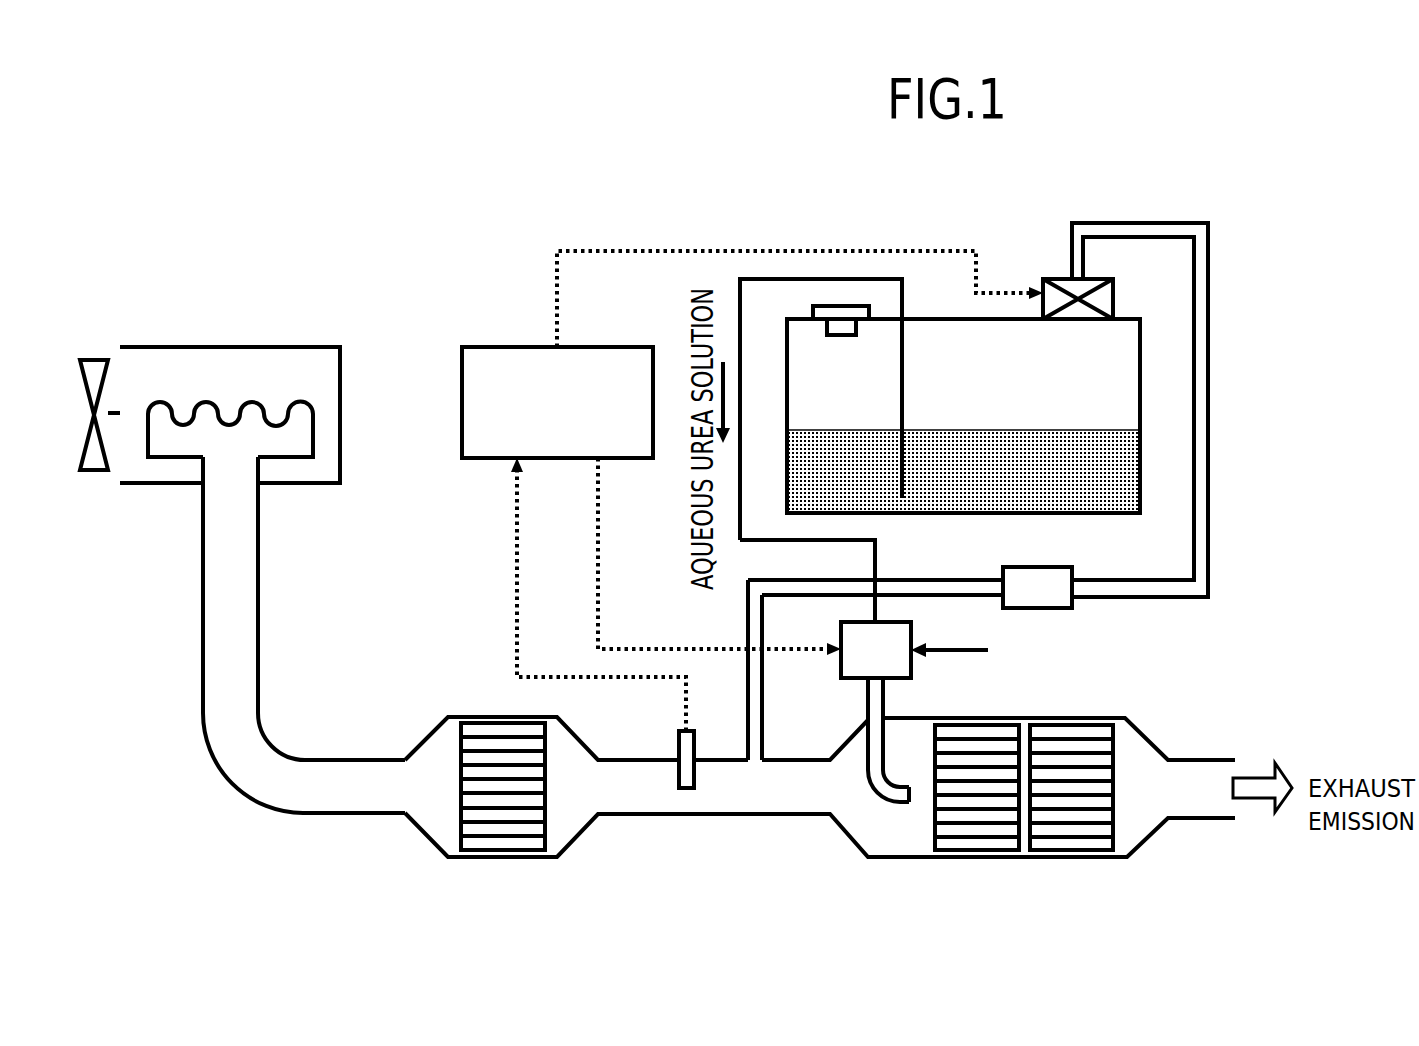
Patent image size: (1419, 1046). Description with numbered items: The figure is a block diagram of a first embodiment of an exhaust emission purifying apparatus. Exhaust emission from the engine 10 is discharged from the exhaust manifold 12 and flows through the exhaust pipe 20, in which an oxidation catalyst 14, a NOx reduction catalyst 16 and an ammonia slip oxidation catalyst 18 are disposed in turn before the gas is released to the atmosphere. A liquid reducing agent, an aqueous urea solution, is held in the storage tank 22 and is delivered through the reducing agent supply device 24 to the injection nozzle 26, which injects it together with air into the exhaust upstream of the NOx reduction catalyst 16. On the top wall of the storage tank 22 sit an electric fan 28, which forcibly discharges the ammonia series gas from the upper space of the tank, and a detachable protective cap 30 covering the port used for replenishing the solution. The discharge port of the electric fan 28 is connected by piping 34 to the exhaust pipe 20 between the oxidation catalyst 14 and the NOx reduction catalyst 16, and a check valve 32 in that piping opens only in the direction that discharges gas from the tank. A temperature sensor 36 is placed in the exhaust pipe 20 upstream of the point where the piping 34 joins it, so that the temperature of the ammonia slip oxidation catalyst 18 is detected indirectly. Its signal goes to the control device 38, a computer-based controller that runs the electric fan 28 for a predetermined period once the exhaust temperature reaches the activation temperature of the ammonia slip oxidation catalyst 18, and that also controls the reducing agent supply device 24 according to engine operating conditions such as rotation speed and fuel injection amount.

The engine 10 is at (232, 347).
The exhaust manifold 12 is at (313, 433).
The oxidation catalyst 14 is at (506, 850).
The NOx reduction catalyst 16 is at (975, 845).
The ammonia slip oxidation catalyst 18 is at (1067, 845).
The exhaust pipe 20 is at (322, 760).
The storage tank 22 is at (1142, 393).
The reducing agent supply device 24 is at (912, 672).
The injection nozzle 26 is at (873, 793).
The electric fan 28 is at (1050, 287).
The protective cap 30 is at (843, 310).
The check valve 32 is at (1037, 568).
The piping 34 is at (1210, 310).
The temperature sensor 36 is at (678, 752).
The control device 38 is at (502, 347).